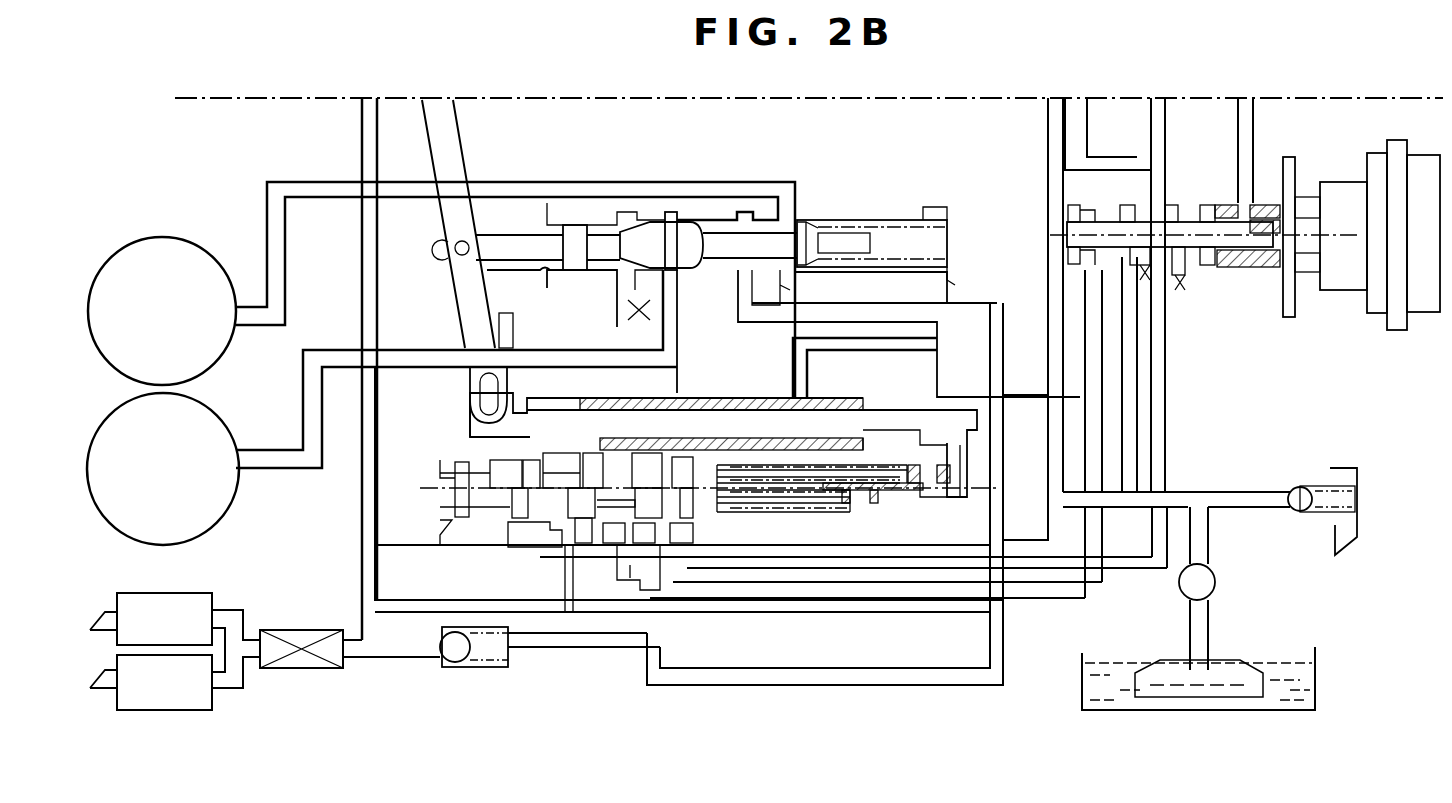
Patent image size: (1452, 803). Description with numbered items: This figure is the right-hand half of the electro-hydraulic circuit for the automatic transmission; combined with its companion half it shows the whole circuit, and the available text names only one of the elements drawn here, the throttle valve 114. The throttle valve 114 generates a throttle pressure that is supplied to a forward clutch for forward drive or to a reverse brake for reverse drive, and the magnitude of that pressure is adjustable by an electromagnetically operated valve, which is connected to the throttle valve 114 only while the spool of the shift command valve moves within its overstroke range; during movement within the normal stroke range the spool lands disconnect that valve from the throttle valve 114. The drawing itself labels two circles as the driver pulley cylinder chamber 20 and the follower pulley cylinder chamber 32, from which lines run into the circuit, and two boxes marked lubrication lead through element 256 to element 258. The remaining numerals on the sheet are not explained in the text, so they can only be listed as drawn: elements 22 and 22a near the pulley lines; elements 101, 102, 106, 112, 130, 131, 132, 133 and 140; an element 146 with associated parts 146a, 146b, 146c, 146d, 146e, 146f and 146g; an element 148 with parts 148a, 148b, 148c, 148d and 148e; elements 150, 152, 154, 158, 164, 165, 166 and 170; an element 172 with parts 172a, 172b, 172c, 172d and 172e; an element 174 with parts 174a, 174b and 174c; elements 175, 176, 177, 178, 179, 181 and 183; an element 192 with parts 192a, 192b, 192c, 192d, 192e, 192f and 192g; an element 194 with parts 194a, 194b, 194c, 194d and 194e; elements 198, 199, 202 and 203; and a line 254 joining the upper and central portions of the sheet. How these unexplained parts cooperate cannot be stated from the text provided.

The driver pulley cylinder chamber 20 is at (228, 503).
The follower pulley cylinder chamber 32 is at (224, 352).
The belt 22 is at (530, 290).
The belt portion 22a is at (518, 318).
The strainer 101 is at (1228, 580).
The valve housing 102 is at (436, 575).
The housing wall 106 is at (812, 177).
The pulley assembly 112 is at (422, 284).
The throttle valve 114 is at (1238, 332).
The oil reservoir 130 is at (1318, 665).
The filter 131 is at (1222, 660).
The conduit 132 is at (860, 553).
The relief valve 133 is at (1308, 486).
The conduit 140 is at (1135, 572).
The spool valve 146 is at (520, 500).
The spool land 146a is at (447, 526).
The spool land 146b is at (510, 562).
The spool land 146c is at (558, 515).
The spool land 146d is at (570, 560).
The spool land 146e is at (630, 552).
The spool land 146f is at (668, 560).
The spool groove 146g is at (686, 478).
The valve bore 148 is at (455, 508).
The bore port 148a is at (480, 537).
The bore port 148b is at (455, 481).
The bore port 148c is at (585, 510).
The bore port 148d is at (645, 508).
The bore port 148e is at (682, 520).
The piston 150 is at (918, 466).
The piston rod 152 is at (780, 470).
The piston chamber 154 is at (886, 492).
The housing end 158 is at (980, 418).
The passage 164 is at (566, 640).
The return line 165 is at (707, 686).
The passage 166 is at (526, 587).
The passage 170 is at (722, 560).
The control shaft 172 is at (876, 220).
The shaft cam portion 172a is at (622, 282).
The shaft portion 172b is at (678, 282).
The shaft shoulder 172c is at (750, 306).
The shaft portion 172d is at (790, 283).
The shaft end 172e is at (940, 274).
The follower rod 174 is at (506, 238).
The rod collar 174a is at (606, 236).
The rod collar 174b is at (700, 224).
The rod end 174c is at (803, 226).
The stop 175 is at (931, 220).
The conduit 176 is at (340, 378).
The spring 177 is at (640, 312).
The conduit 178 is at (435, 150).
The conduit 179 is at (326, 198).
The pivot pin 181 is at (440, 246).
The slot 183 is at (470, 410).
The clutch shaft 192 is at (1160, 212).
The shaft portion 192a is at (1083, 250).
The shaft portion 192b is at (1096, 270).
The shaft portion 192c is at (1110, 272).
The shaft portion 192d is at (1166, 272).
The shaft portion 192e is at (1180, 272).
The shaft portion 192f is at (1240, 273).
The shaft portion 192g is at (1236, 268).
The clutch member 194 is at (1082, 252).
The clutch member portion 194a is at (1080, 228).
The clutch member portion 194b is at (1080, 240).
The clutch member portion 194c is at (1200, 200).
The clutch member portion 194d is at (1226, 215).
The clutch plate 194e is at (1300, 200).
The flywheel 198 is at (1418, 152).
The passage 199 is at (655, 612).
The conduit 202 is at (1115, 170).
The conduit 203 is at (1255, 142).
The conduit 254 is at (366, 270).
The lubrication valve 256 is at (306, 630).
The pump 258 is at (441, 662).